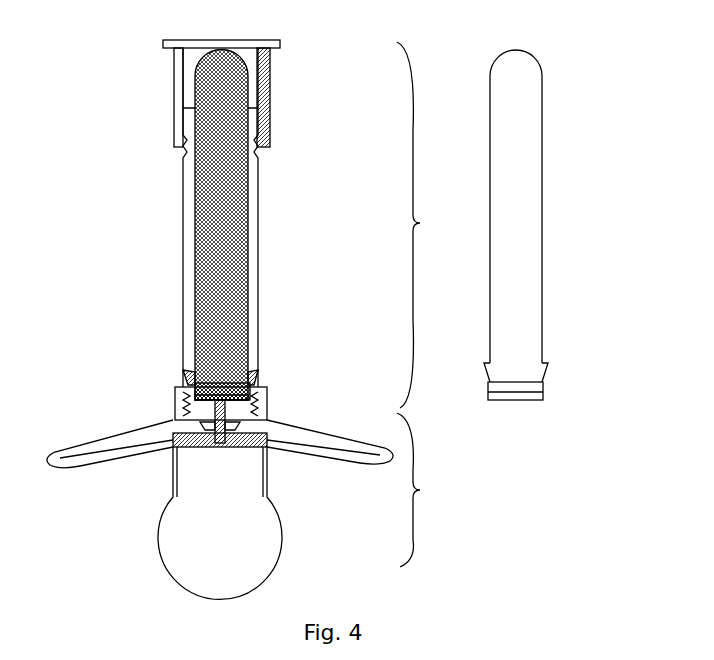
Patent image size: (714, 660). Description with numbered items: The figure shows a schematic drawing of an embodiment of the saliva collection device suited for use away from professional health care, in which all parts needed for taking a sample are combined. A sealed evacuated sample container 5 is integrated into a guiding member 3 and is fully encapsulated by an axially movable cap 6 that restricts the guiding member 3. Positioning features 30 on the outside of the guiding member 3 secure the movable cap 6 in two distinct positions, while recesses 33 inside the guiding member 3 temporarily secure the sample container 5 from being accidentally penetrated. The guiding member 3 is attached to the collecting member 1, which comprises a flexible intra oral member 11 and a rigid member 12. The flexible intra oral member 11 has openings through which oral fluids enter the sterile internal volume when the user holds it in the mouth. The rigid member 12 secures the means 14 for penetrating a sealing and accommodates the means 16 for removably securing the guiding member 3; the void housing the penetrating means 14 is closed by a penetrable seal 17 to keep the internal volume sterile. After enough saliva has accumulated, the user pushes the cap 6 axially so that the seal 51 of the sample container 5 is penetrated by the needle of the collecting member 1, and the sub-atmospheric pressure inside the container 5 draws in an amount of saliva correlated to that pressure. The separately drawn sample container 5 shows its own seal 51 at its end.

The collecting member 1 is at (250, 487).
The guiding member 3 is at (183, 178).
The sealed evacuated sample container 5 is at (198, 229).
The cap 6 is at (233, 40).
The flexible intra oral member 11 is at (272, 533).
The rigid member 12 is at (313, 418).
The means for penetrating a sealing 14 is at (223, 449).
The means for removably securing a coupling member or a guiding member 16 is at (179, 406).
The penetrable seal 17 is at (234, 385).
The positioning feature 30 is at (272, 150).
The recess 33 is at (181, 376).
The seal of the sample container 51 is at (207, 390).